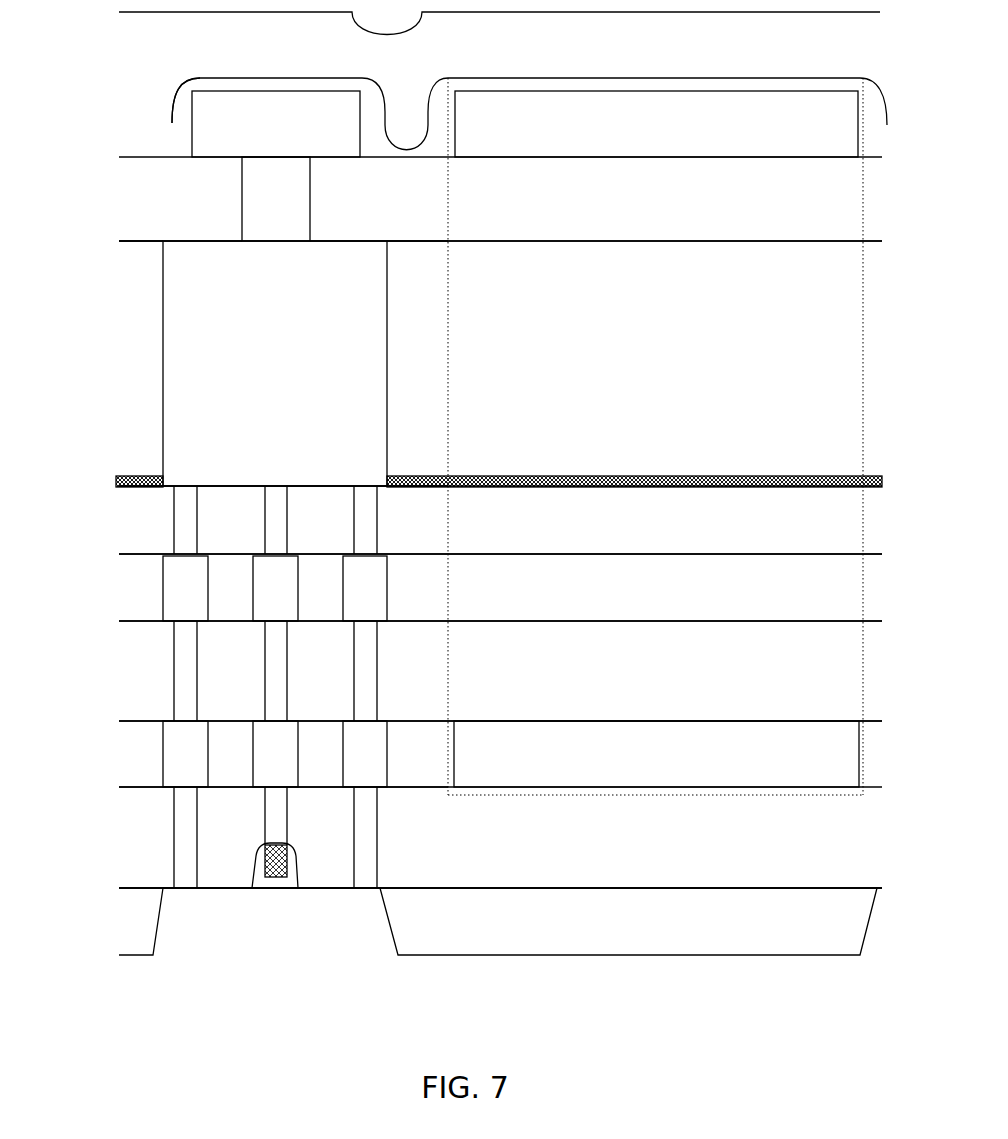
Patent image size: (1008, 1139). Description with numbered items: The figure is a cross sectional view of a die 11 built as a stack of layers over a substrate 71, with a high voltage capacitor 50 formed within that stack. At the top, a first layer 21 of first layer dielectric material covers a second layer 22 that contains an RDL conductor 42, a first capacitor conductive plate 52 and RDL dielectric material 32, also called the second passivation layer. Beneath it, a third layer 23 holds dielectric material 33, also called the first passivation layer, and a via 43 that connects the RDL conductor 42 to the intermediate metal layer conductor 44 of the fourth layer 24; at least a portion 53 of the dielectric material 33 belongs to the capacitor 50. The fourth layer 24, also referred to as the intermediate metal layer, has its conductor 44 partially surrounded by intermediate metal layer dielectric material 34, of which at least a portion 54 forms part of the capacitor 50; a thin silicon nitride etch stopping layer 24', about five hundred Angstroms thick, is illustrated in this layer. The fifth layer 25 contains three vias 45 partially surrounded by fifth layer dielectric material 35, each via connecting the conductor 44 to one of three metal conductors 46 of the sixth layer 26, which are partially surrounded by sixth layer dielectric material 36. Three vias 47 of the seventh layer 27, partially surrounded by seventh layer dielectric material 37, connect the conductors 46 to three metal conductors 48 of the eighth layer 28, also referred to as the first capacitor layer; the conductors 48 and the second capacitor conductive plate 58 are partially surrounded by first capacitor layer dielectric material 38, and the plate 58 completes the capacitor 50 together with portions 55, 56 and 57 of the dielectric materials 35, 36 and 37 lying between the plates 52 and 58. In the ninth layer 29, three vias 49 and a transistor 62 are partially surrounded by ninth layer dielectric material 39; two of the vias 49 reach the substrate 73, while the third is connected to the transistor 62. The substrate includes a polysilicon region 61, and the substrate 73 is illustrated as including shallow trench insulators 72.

The die 11 is at (407, 1037).
The first layer 21 is at (269, 66).
The second layer 22 is at (82, 127).
The third layer 23 is at (85, 186).
The fourth layer 24 is at (468, 392).
The etch stopping layer 24' is at (474, 459).
The fifth layer 25 is at (105, 521).
The sixth layer 26 is at (103, 589).
The seventh layer 27 is at (103, 666).
The eighth layer 28 is at (105, 746).
The ninth layer 29 is at (105, 835).
The RDL dielectric material 32 is at (115, 123).
The dielectric material 33 is at (174, 204).
The intermediate metal layer dielectric material 34 is at (127, 384).
The fifth layer dielectric material 35 is at (124, 507).
The sixth layer dielectric material 36 is at (124, 577).
The seventh layer dielectric material 37 is at (124, 644).
The first capacitor layer dielectric material 38 is at (117, 742).
The ninth layer dielectric material 39 is at (124, 819).
The RDL conductor 42 is at (264, 132).
The via 43 is at (264, 204).
The intermediate metal layer conductor 44 is at (264, 374).
The vias 45 is at (198, 519).
The metal conductors 46 is at (174, 597).
The vias 47 is at (198, 672).
The metal conductors 48 is at (174, 764).
The vias 49 is at (199, 829).
The high voltage capacitor 50 is at (657, 85).
The first capacitor conductive plate 52 is at (551, 132).
The portion of dielectric material 53 is at (612, 204).
The portion of intermediate metal layer dielectric material 54 is at (602, 339).
The portion of fifth layer dielectric material 55 is at (634, 540).
The portion of sixth layer dielectric material 56 is at (629, 607).
The portion of seventh layer dielectric material 57 is at (621, 677).
The second capacitor conductive plate 58 is at (644, 766).
The polysilicon region 61 is at (288, 880).
The transistor 62 is at (255, 885).
The substrate 71 is at (95, 919).
The shallow trench insulator 72 is at (117, 921).
The substrate 73 is at (337, 941).